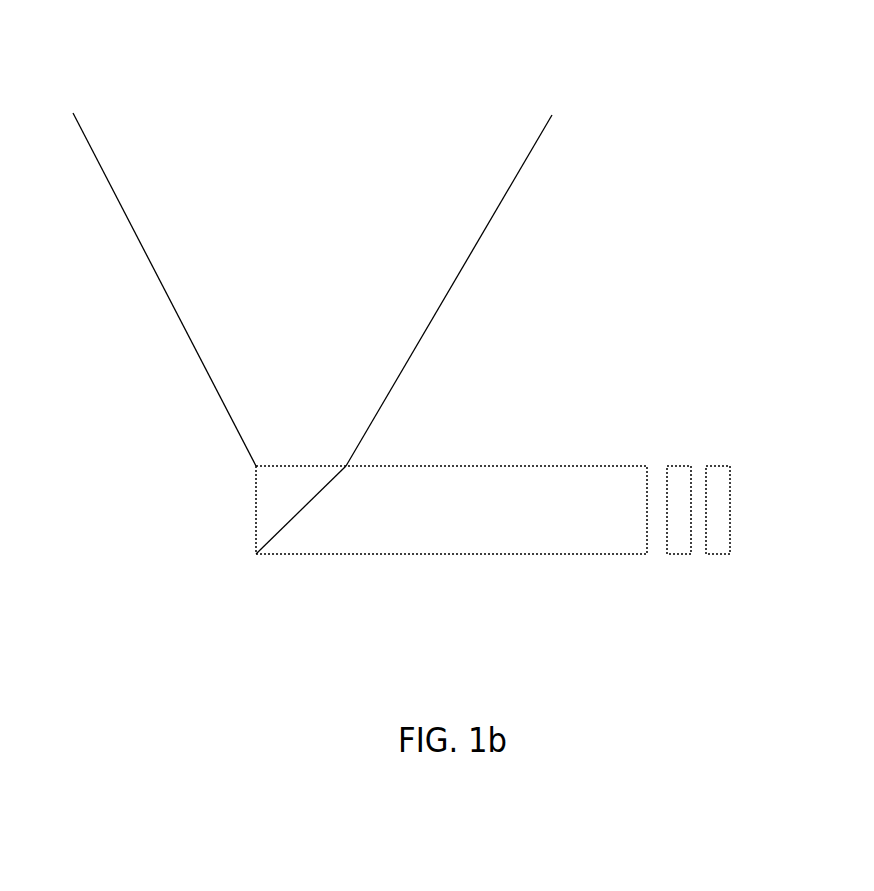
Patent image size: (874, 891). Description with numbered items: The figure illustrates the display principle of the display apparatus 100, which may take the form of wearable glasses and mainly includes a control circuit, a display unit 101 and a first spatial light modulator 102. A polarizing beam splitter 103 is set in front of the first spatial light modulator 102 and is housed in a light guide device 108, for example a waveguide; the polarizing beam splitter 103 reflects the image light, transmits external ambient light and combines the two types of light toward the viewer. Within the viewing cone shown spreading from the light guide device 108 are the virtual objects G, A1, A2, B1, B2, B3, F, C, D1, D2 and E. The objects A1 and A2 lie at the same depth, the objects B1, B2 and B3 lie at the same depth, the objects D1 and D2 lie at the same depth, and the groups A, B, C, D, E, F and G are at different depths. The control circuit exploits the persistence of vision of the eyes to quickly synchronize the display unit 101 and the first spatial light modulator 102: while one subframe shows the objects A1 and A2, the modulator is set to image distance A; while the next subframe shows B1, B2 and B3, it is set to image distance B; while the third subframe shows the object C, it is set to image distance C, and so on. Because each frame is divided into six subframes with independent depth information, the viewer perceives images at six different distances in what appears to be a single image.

The display apparatus 100 is at (556, 274).
The display unit 101 is at (722, 466).
The first spatial light modulator 102 is at (672, 466).
The polarizing beam splitter 103 is at (323, 488).
The light guide device 108 is at (545, 465).
The virtual object G is at (240, 33).
The virtual object A1 is at (177, 88).
The virtual object A2 is at (295, 83).
The virtual object B1 is at (357, 157).
The virtual object B2 is at (417, 157).
The virtual object B3 is at (474, 155).
The virtual object F is at (243, 234).
The virtual object C is at (384, 273).
The virtual object D1 is at (245, 315).
The virtual object D2 is at (355, 312).
The virtual object E is at (304, 381).